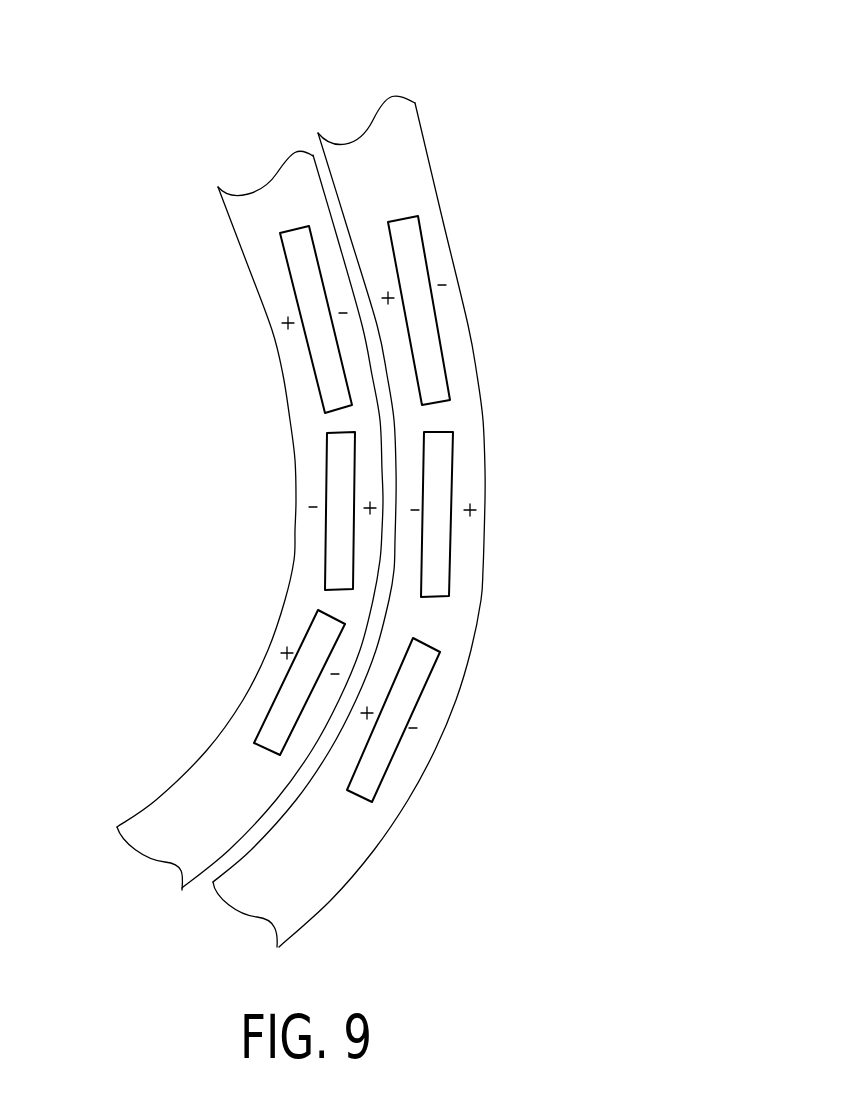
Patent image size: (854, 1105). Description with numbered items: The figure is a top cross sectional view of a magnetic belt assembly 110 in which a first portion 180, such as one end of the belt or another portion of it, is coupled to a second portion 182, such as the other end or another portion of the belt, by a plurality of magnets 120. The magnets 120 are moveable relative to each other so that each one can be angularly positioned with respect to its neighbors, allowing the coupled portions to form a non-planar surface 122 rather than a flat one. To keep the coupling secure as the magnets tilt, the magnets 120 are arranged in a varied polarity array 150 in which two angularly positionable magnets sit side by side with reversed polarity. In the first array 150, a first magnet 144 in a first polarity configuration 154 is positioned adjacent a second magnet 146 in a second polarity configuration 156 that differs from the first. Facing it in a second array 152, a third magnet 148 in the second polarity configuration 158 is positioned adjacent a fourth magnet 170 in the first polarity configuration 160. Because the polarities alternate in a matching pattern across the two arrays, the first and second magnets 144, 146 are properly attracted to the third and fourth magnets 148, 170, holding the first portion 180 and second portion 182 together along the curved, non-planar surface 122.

The magnetic belt assembly 110 is at (170, 109).
The magnets 120 is at (383, 740).
The non-planar surface 122 is at (370, 297).
The first magnet 144 is at (402, 705).
The second magnet 146 is at (437, 561).
The third magnet 148 is at (345, 493).
The varied polarity array 150 is at (424, 207).
The second array 152 is at (270, 227).
The first polarity configuration 154 is at (397, 723).
The second polarity configuration 156 is at (437, 494).
The second polarity configuration 158 is at (240, 464).
The first polarity configuration 160 is at (270, 730).
The fourth magnet 170 is at (293, 682).
The first portion 180 is at (204, 292).
The second portion 182 is at (498, 279).